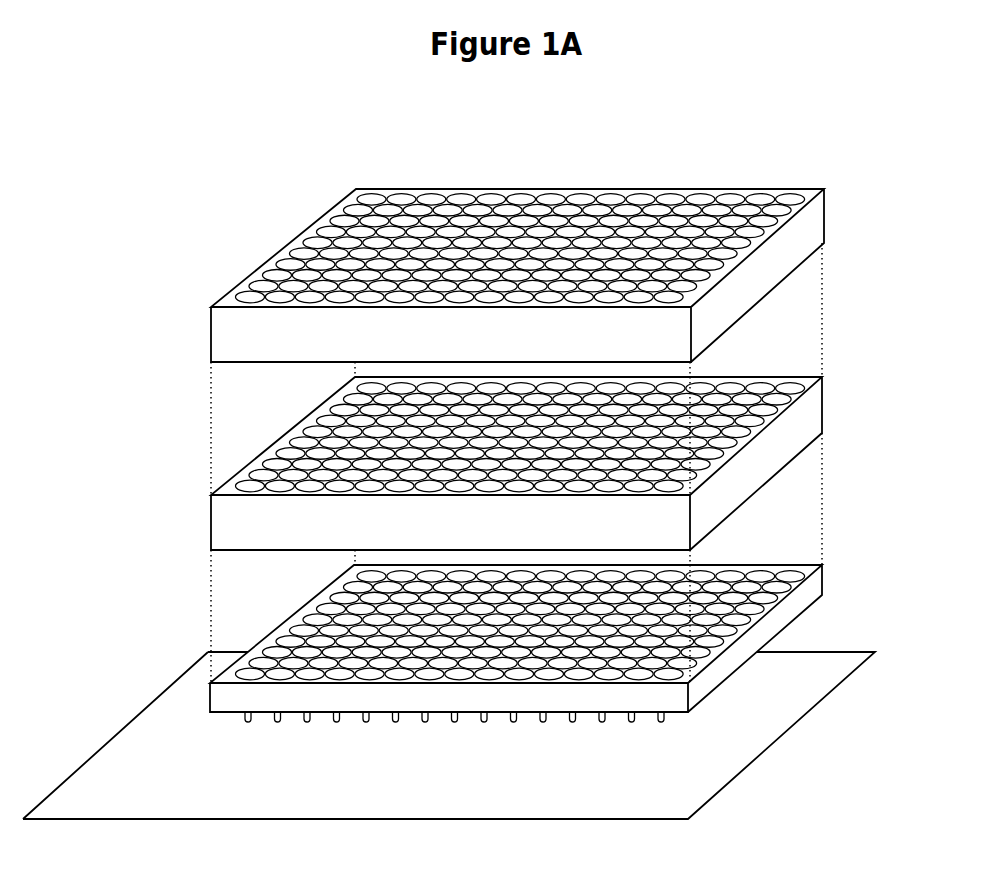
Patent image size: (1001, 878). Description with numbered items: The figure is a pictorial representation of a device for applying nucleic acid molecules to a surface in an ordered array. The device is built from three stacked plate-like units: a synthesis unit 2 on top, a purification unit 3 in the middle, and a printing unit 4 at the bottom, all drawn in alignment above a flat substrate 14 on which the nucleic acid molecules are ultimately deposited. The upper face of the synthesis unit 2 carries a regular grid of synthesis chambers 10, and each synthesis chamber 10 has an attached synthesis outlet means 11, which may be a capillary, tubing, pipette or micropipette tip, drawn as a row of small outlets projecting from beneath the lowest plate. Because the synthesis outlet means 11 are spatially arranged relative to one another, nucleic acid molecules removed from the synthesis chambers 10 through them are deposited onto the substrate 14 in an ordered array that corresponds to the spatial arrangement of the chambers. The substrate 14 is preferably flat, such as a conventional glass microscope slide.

The synthesis unit 2 is at (830, 216).
The purification unit 3 is at (828, 410).
The printing unit 4 is at (829, 582).
The synthesis chamber 10 is at (589, 193).
The synthesis outlet means 11 is at (484, 727).
The substrate 14 is at (822, 713).